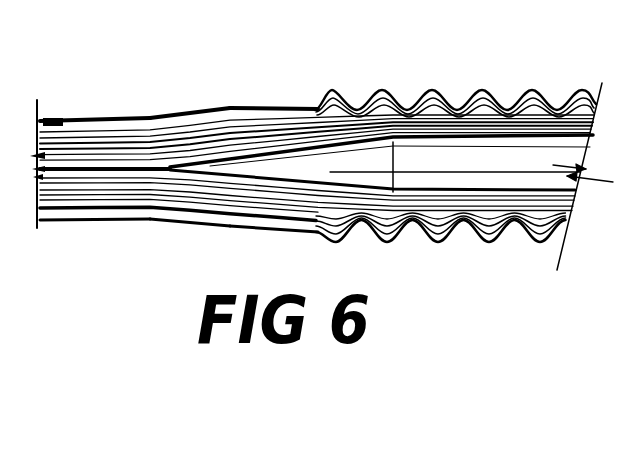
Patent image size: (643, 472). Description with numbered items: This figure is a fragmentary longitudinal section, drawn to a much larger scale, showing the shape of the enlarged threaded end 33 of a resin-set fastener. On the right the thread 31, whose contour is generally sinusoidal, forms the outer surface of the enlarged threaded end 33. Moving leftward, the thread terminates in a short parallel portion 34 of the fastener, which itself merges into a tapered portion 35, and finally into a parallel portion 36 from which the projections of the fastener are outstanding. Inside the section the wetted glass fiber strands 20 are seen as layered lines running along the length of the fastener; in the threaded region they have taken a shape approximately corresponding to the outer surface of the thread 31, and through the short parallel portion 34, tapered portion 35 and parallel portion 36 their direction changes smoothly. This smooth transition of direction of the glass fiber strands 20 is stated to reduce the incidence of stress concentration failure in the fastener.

The glass fiber strands 20 is at (548, 118).
The thread form 31 is at (400, 92).
The enlarged threaded end 33 is at (495, 82).
The short parallel portion 34 is at (278, 108).
The tapered portion 35 is at (187, 113).
The parallel portion 36 is at (90, 120).